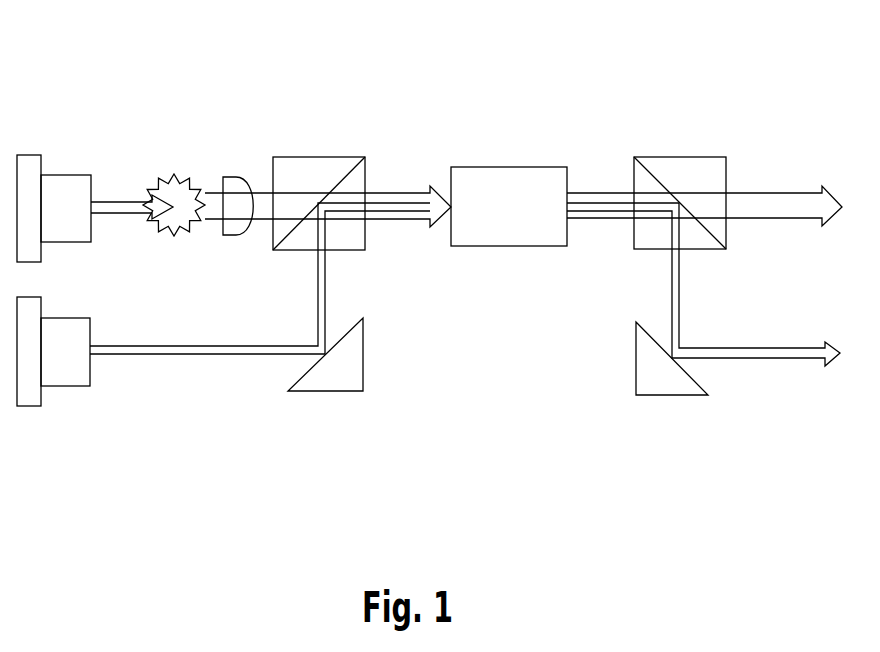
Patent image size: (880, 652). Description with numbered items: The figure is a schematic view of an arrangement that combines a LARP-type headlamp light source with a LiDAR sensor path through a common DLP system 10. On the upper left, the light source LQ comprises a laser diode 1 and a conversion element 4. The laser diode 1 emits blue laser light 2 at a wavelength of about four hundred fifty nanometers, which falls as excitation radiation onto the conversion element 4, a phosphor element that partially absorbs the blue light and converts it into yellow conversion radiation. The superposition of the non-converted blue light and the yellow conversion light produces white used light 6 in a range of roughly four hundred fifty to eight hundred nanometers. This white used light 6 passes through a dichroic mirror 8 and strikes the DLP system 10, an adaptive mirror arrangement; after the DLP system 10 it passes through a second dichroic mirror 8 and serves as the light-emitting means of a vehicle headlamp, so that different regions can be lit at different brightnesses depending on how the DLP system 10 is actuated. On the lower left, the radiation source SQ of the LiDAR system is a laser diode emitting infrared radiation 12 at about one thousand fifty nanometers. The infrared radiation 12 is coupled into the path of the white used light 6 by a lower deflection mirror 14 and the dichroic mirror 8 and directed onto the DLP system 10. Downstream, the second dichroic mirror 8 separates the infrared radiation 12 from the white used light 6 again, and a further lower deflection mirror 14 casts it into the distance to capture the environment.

The light source LQ is at (217, 87).
The radiation source SQ is at (68, 387).
The laser diode 1 is at (67, 175).
The blue laser light 2 is at (117, 202).
The conversion element 4 is at (182, 173).
The white used light 6 is at (212, 196).
The dichroic mirror 8 is at (240, 177).
The DLP system 10 is at (492, 167).
The infrared radiation 12 is at (240, 355).
The lower deflection mirror 14 is at (334, 392).